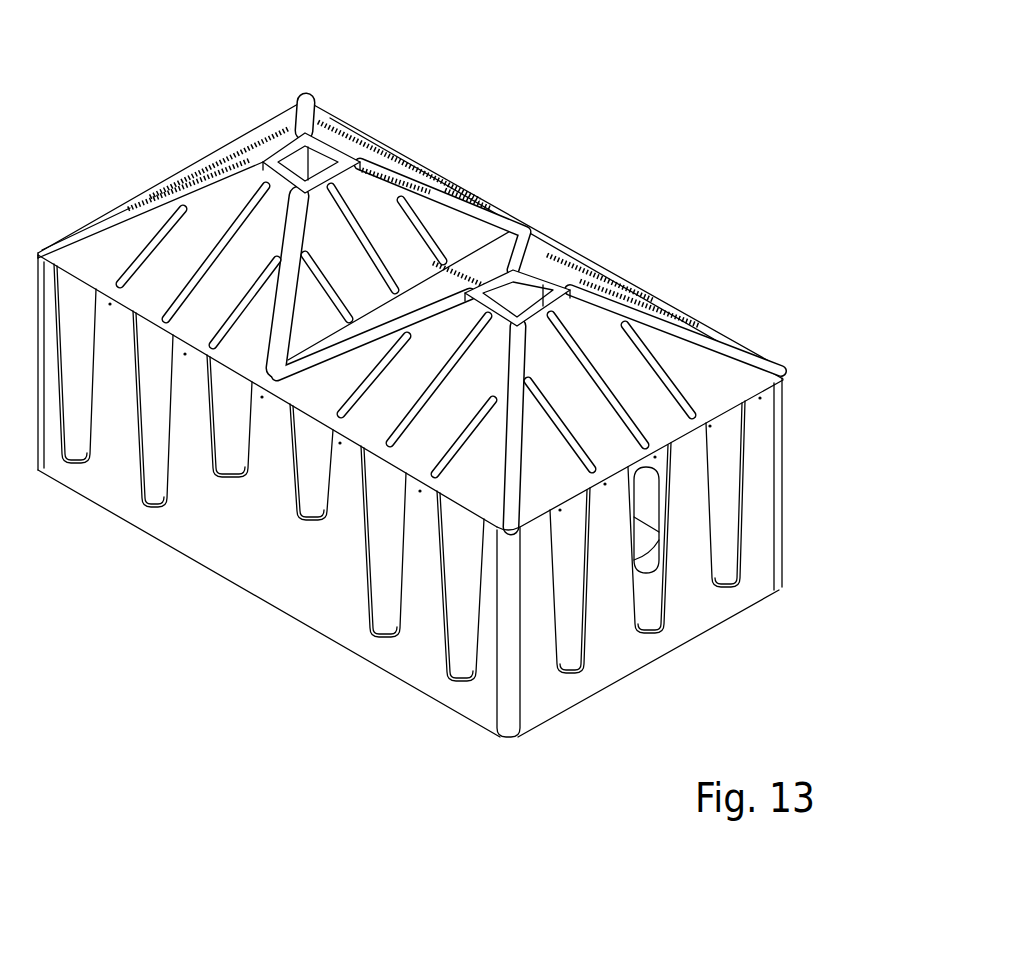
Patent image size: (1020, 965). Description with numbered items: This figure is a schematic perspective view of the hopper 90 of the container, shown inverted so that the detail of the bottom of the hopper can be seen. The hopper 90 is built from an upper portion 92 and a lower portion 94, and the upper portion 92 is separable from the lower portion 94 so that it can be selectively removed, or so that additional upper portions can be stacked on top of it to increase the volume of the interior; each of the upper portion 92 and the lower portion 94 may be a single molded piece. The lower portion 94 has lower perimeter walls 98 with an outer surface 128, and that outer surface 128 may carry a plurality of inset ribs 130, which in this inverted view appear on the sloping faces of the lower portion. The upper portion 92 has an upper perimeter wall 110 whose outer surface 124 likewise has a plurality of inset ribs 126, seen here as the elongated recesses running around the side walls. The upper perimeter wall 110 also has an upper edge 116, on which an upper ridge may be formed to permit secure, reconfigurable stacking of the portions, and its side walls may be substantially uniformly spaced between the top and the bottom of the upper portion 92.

The hopper 90 is at (557, 90).
The upper portion 92 is at (561, 741).
The lower portion 94 is at (632, 263).
The lower perimeter walls 98 is at (408, 153).
The upper perimeter wall 110 is at (287, 583).
The upper edge 116 is at (363, 655).
The outer surface 124 is at (115, 470).
The inset ribs 126 is at (158, 480).
The outer surface 128 is at (458, 236).
The inset ribs 130 is at (428, 222).